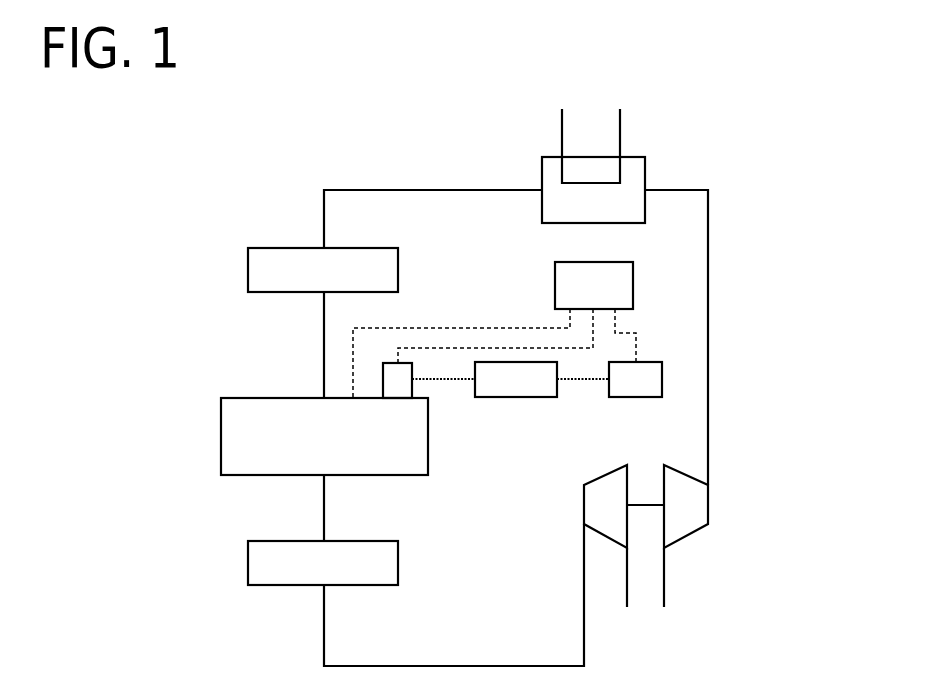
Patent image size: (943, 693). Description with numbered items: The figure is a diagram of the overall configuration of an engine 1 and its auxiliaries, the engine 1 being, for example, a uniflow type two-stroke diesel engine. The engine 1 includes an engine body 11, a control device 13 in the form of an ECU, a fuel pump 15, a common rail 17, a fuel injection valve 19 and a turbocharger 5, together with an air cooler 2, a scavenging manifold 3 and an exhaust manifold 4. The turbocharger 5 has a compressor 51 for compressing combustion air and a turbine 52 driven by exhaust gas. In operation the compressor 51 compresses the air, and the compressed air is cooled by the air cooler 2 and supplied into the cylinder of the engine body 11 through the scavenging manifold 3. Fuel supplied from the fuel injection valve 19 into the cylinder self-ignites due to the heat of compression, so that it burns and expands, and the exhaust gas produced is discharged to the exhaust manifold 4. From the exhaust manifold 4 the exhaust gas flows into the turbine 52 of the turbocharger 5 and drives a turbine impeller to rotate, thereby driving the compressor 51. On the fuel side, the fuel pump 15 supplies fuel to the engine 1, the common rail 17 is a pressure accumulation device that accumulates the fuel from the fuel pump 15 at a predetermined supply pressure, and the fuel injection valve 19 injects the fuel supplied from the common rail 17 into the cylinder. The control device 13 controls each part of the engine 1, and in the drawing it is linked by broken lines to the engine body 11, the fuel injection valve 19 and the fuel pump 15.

The engine 1 is at (767, 157).
The air cooler 2 is at (542, 172).
The scavenging manifold 3 is at (250, 270).
The exhaust manifold 4 is at (250, 565).
The turbocharger 5 is at (654, 536).
The engine body 11 is at (221, 437).
The control device 13 is at (555, 275).
The fuel pump 15 is at (636, 398).
The common rail 17 is at (538, 398).
The fuel injection valve 19 is at (413, 385).
The compressor 51 is at (710, 515).
The turbine 52 is at (584, 495).